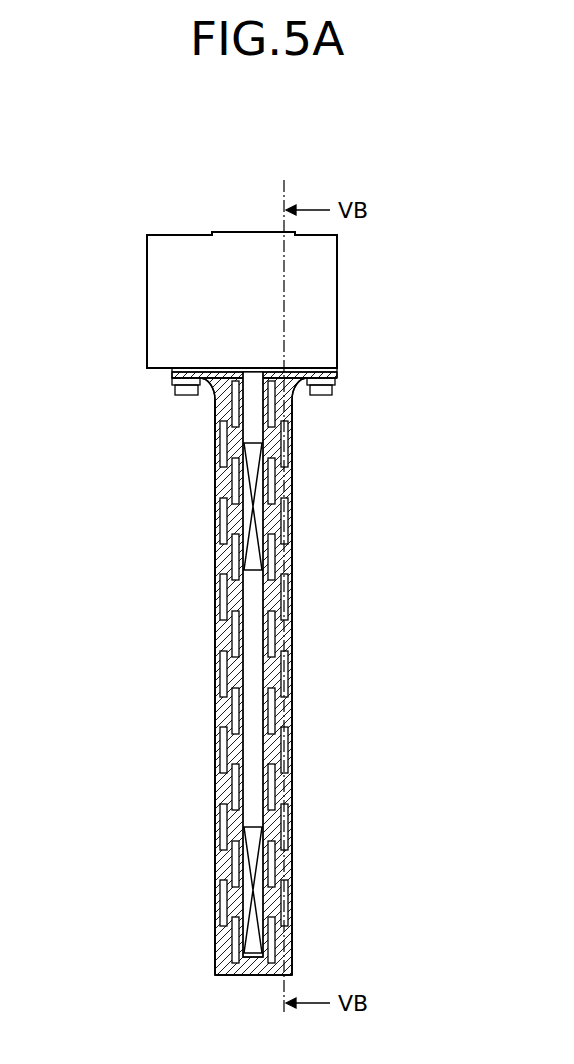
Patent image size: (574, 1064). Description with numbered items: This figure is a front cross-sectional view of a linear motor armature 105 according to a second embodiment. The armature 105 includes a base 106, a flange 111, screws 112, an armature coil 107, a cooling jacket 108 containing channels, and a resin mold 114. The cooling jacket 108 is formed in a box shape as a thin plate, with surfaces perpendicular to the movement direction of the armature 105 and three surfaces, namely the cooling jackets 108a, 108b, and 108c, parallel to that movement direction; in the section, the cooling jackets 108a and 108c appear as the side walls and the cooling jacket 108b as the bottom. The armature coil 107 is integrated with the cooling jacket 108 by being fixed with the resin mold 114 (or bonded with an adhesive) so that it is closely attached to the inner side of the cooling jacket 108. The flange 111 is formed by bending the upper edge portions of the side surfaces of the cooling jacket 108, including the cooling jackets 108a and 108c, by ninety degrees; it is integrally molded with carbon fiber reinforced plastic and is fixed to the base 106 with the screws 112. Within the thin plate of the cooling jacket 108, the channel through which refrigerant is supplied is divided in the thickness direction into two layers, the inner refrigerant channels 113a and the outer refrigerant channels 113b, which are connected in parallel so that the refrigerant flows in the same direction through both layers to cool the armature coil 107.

The armature 105 is at (152, 202).
The base 106 is at (147, 278).
The armature coil 107 is at (255, 835).
The cooling jacket 108 is at (207, 946).
The cooling jacket 108a is at (290, 553).
The cooling jacket 108b is at (243, 977).
The cooling jacket 108c is at (217, 554).
The flange 111 is at (185, 375).
The screws 112 is at (185, 397).
The inner refrigerant channels 113a is at (228, 628).
The outer refrigerant channels 113b is at (218, 670).
The resin mold 114 is at (252, 715).